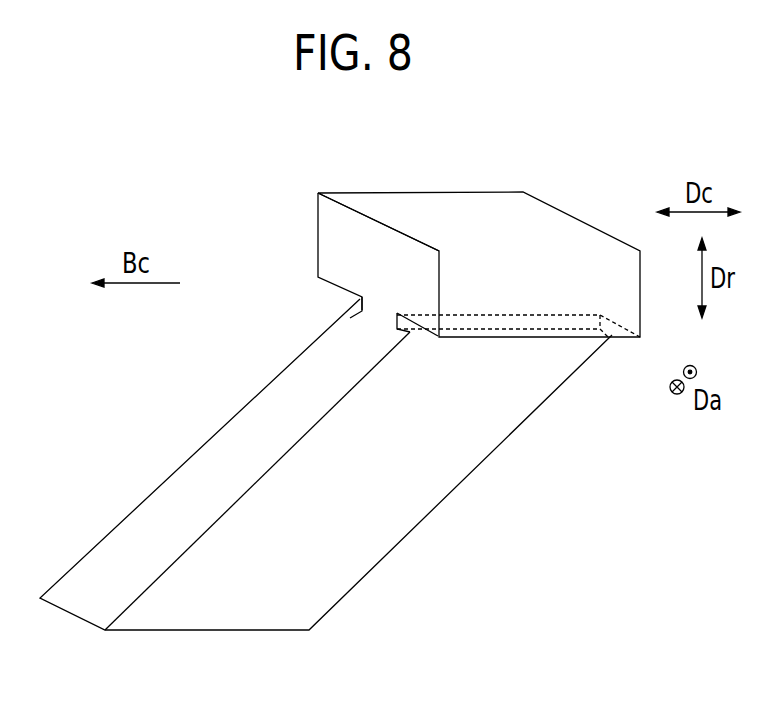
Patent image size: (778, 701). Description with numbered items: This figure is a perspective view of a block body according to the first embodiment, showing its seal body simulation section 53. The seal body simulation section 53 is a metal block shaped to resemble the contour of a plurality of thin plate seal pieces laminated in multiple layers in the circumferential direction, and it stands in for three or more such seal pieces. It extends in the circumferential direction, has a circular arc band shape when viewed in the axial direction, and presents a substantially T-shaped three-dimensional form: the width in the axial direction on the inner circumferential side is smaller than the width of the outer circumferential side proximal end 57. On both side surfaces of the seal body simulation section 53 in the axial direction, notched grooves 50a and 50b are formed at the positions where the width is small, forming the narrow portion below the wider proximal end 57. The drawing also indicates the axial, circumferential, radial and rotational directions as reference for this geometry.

The outer circumferential side proximal end 57 is at (443, 175).
The seal body simulation section 53 is at (152, 182).
The notched groove 50a is at (400, 331).
The notched groove 50b is at (358, 303).